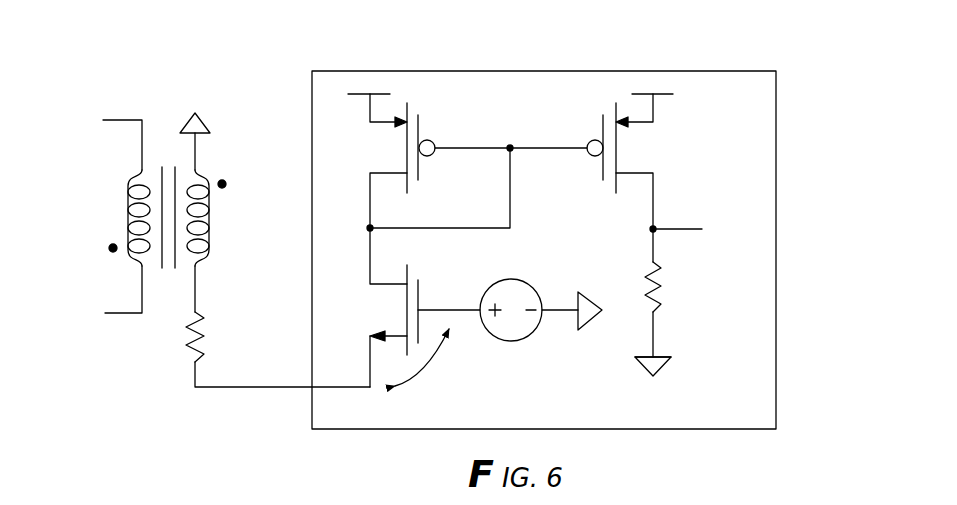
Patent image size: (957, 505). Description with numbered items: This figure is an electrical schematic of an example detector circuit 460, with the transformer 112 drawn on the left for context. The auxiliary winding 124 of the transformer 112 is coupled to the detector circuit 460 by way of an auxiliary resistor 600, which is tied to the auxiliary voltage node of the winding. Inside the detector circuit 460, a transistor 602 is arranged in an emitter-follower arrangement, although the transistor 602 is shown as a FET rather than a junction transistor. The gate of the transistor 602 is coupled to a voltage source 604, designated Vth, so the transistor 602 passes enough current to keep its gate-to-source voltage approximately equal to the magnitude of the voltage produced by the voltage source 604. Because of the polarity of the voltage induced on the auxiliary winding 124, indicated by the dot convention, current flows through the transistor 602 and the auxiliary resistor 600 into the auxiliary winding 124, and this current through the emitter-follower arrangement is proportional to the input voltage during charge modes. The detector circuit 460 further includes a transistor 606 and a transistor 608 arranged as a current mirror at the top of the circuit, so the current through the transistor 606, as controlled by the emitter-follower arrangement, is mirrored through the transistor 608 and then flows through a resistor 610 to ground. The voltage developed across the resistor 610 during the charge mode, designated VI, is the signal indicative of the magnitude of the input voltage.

The transformer 112 is at (165, 115).
The auxiliary winding 124 is at (224, 211).
The auxiliary resistor 600 is at (185, 368).
The detector circuit 460 is at (776, 119).
The transistor 602 is at (392, 310).
The voltage source 604 is at (522, 339).
The transistor 606 is at (434, 132).
The transistor 608 is at (587, 128).
The resistor 610 is at (667, 288).